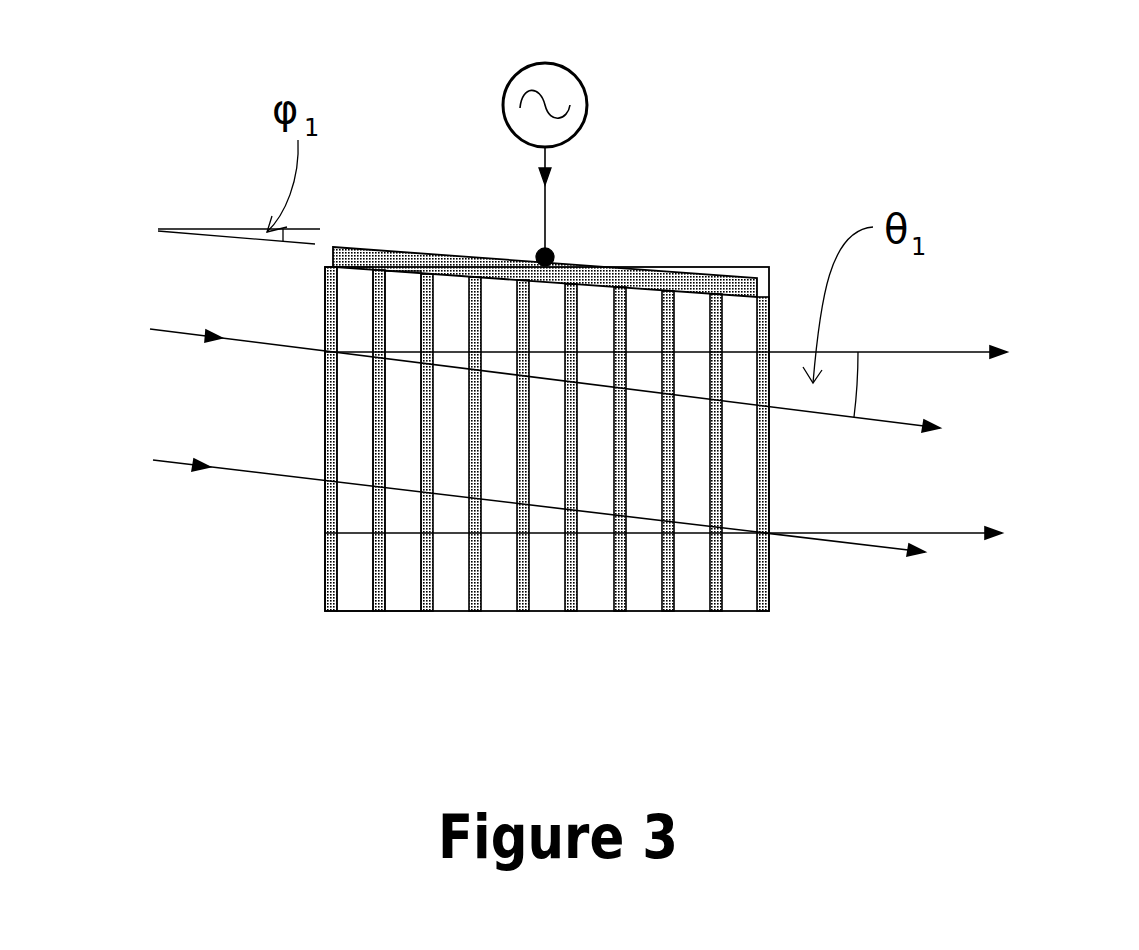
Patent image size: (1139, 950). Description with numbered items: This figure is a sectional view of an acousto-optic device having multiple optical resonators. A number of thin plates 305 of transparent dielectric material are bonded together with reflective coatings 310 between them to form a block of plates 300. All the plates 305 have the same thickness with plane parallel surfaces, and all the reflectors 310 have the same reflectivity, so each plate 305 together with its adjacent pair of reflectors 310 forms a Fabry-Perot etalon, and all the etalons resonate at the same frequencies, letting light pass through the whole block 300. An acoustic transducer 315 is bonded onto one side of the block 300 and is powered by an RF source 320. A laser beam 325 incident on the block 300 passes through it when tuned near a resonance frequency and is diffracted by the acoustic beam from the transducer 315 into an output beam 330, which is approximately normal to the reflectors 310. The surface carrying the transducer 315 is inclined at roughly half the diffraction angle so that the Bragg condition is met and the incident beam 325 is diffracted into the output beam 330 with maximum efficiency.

The block of plates 300 is at (722, 628).
The thin plates 305 is at (401, 593).
The reflective coatings 310 is at (472, 612).
The acoustic transducer 315 is at (663, 270).
The RF source 320 is at (590, 106).
The incident laser beam 325 is at (143, 329).
The output beam 330 is at (1017, 357).